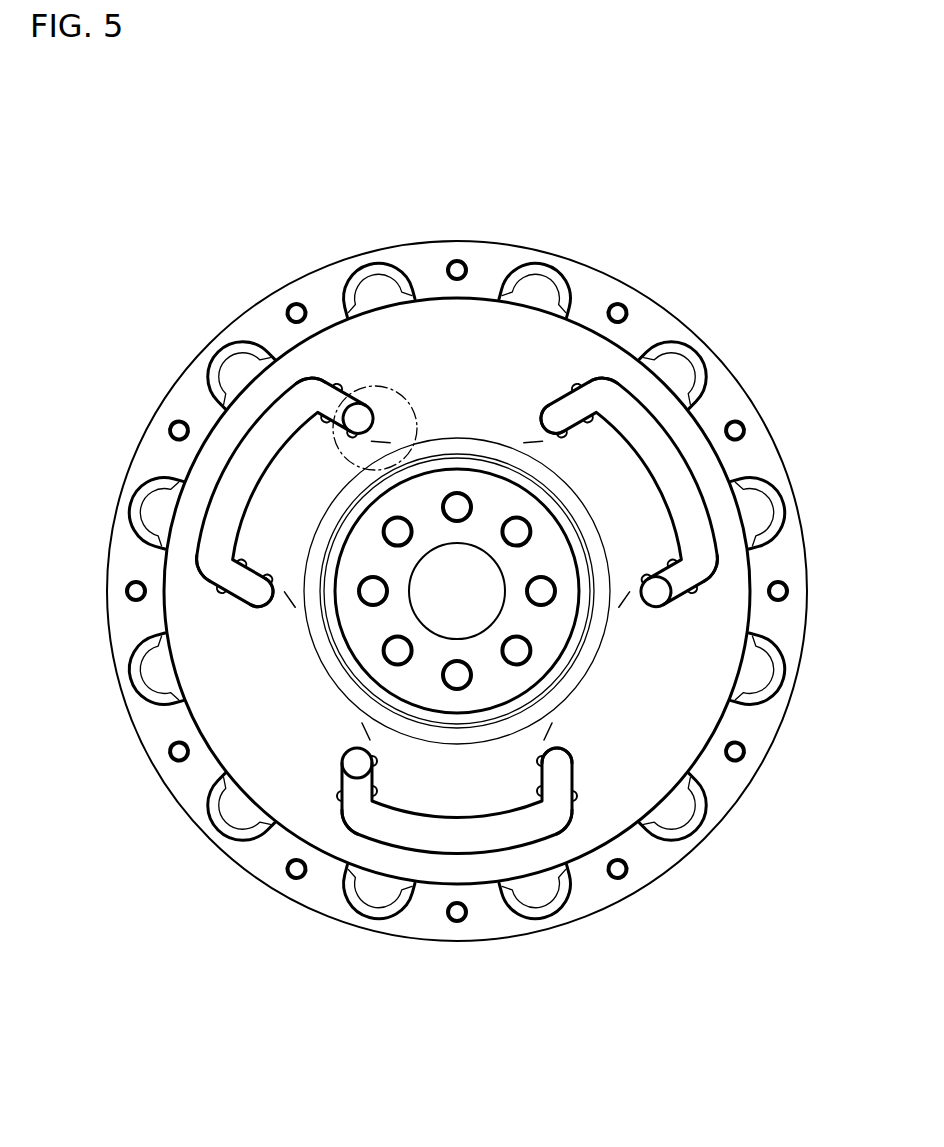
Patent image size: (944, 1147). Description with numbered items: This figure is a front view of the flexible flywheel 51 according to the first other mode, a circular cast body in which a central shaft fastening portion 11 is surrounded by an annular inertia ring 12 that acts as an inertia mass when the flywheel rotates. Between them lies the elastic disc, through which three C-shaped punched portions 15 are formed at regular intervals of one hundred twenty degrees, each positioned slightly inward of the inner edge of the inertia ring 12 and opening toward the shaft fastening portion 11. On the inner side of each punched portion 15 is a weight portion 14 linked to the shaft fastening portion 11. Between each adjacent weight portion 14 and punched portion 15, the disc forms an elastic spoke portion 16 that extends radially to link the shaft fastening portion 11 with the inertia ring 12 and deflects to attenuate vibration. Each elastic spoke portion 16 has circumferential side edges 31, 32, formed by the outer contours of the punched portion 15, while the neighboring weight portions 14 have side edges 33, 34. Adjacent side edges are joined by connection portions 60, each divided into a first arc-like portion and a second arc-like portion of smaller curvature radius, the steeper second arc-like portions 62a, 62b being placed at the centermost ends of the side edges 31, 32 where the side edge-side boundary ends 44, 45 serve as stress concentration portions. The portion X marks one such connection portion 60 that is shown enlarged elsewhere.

The shaft fastening portion 11 is at (583, 677).
The inertia ring 12 is at (812, 624).
The weight portion 14 is at (270, 460).
The punched portion 15 is at (214, 563).
The elastic spoke portion 16 is at (467, 340).
The side edge 31 is at (341, 812).
The side edge 32 is at (565, 812).
The side edge 33 is at (376, 791).
The side edge 34 is at (538, 791).
The side edge-side boundary end 44 is at (353, 747).
The side edge-side boundary end 45 is at (561, 748).
The flexible flywheel 51 is at (773, 292).
The connection portion 60 is at (376, 761).
The second arc-like portion 62a is at (338, 795).
The second arc-like portion 62b is at (576, 795).
The portion X is at (402, 393).